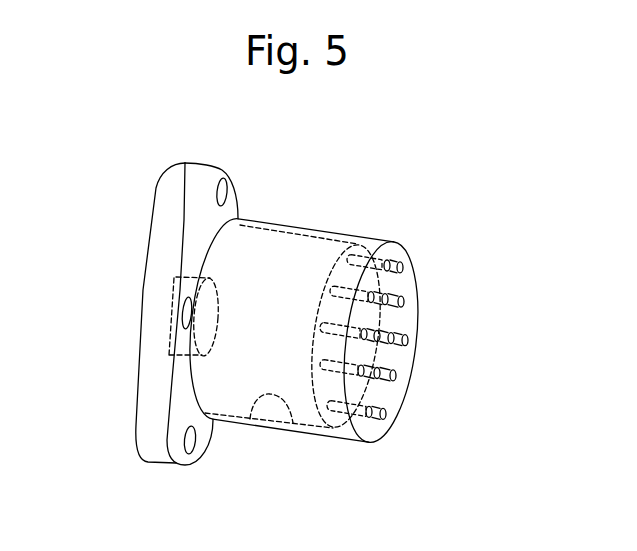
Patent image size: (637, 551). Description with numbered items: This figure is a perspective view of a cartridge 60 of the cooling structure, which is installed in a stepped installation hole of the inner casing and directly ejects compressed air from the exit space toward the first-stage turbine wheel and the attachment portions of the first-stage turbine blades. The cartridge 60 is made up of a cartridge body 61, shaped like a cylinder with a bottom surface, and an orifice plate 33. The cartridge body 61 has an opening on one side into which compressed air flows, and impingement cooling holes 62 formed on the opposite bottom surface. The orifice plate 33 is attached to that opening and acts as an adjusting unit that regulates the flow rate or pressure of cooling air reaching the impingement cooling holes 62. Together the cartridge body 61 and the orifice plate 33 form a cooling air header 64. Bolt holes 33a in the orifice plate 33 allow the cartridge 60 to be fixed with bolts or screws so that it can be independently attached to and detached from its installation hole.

The cartridge 60 is at (163, 178).
The orifice plate 33 is at (152, 373).
The bolt holes 33a is at (228, 191).
The cartridge body 61 is at (388, 241).
The impingement cooling holes 62 is at (388, 410).
The cooling air header 64 is at (253, 422).